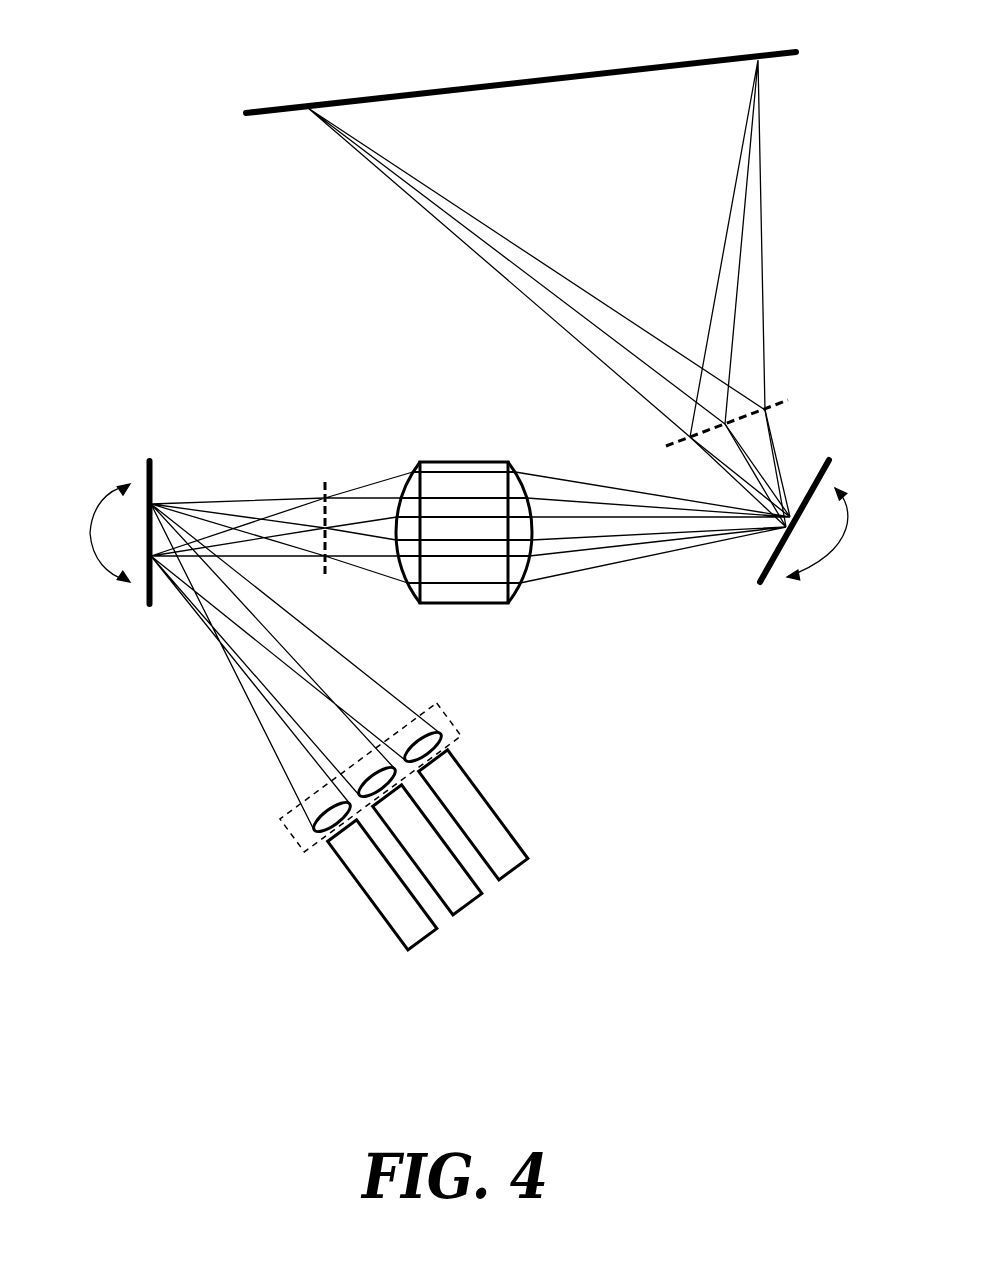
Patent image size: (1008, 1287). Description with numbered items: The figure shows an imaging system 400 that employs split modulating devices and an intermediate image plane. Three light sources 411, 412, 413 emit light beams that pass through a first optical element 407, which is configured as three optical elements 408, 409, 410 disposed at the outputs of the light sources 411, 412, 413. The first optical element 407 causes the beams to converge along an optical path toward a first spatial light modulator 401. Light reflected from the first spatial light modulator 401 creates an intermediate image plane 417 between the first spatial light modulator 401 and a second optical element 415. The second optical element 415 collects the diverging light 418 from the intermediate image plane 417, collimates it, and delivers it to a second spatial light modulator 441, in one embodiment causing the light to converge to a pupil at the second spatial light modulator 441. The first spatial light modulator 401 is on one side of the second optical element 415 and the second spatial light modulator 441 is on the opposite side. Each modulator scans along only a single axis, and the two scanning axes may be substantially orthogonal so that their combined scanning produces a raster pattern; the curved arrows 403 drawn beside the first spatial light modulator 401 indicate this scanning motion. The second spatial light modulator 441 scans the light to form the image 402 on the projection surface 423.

The imaging system 400 is at (235, 338).
The first spatial light modulator 401 is at (146, 471).
The image 402 is at (593, 88).
The mirror scan rotation 403 is at (90, 533).
The first optical element 407 is at (452, 728).
The optical element 408 is at (318, 822).
The optical element 409 is at (360, 788).
The optical element 410 is at (437, 736).
The light source 411 is at (423, 942).
The light source 412 is at (470, 908).
The light source 413 is at (517, 875).
The second optical element 415 is at (472, 461).
The intermediate image plane 417 is at (320, 497).
The diverging light 418 is at (366, 510).
The projection surface 423 is at (432, 92).
The second spatial light modulator 441 is at (830, 460).